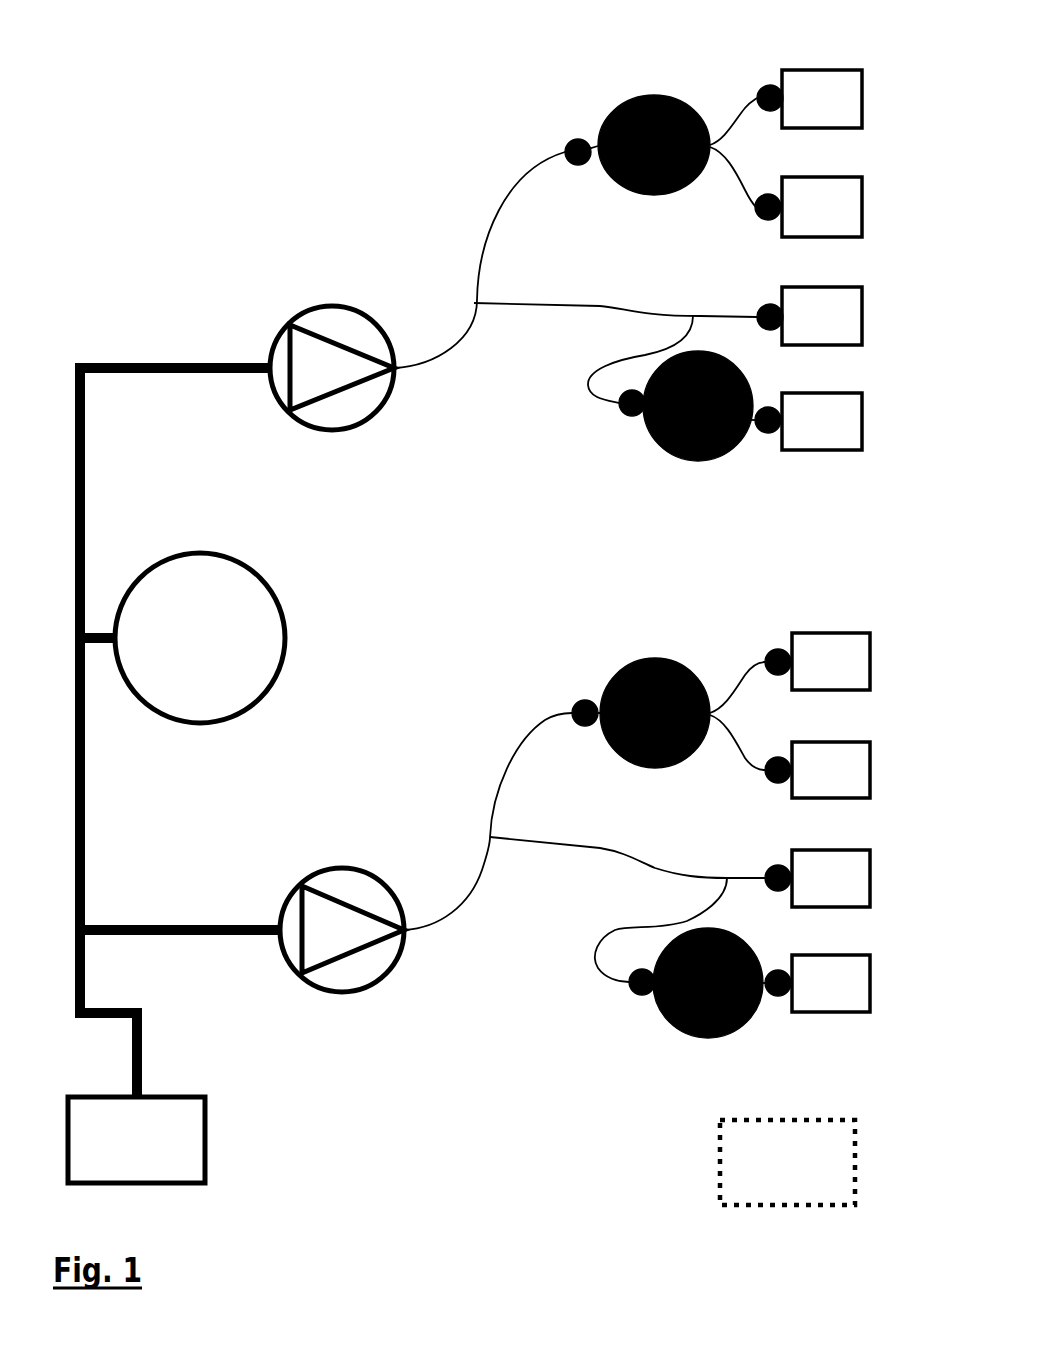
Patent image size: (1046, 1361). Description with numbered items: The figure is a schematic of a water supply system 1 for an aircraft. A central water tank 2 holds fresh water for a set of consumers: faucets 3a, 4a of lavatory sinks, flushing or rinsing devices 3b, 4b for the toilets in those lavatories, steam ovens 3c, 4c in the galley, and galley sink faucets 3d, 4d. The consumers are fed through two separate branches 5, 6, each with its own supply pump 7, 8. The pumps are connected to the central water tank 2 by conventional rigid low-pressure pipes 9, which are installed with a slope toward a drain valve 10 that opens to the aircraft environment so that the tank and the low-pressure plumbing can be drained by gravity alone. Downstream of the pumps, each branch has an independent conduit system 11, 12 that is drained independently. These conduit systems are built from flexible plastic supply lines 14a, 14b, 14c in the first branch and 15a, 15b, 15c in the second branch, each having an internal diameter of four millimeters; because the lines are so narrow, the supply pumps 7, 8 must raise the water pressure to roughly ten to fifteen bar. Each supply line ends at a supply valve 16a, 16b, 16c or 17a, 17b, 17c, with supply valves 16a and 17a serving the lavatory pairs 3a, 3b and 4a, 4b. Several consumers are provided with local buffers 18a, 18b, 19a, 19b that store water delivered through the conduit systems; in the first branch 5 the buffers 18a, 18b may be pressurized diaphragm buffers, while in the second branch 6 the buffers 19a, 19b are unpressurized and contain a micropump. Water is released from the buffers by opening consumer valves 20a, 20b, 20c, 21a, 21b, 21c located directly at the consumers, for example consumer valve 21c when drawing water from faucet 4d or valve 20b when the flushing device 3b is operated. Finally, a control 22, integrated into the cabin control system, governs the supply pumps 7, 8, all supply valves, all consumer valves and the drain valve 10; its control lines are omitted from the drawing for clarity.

The water supply system 1 is at (258, 150).
The central water tank 2 is at (192, 652).
The faucet 3a is at (806, 114).
The flushing or rinsing device 3b is at (806, 222).
The steam oven 3c is at (806, 331).
The faucet 3d is at (806, 436).
The faucet 4a is at (815, 676).
The flushing or rinsing device 4b is at (815, 785).
The steam oven 4c is at (815, 894).
The faucet 4d is at (815, 998).
The first branch 5 is at (466, 428).
The second branch 6 is at (481, 957).
The supply pump 7 is at (333, 304).
The supply pump 8 is at (342, 868).
The low-pressure pipes 9 is at (178, 362).
The drain valve 10 is at (121, 1154).
The conduit system 11 is at (499, 167).
The conduit system 12 is at (537, 895).
The flexible supply line 14a is at (493, 208).
The flexible supply line 14b is at (594, 305).
The flexible supply line 14c is at (600, 398).
The flexible supply line 15a is at (545, 717).
The flexible supply line 15b is at (648, 865).
The flexible supply line 15c is at (660, 924).
The supply valve 16a is at (577, 139).
The supply valve 16b is at (766, 304).
The supply valve 16c is at (632, 416).
The supply valve 17a is at (589, 701).
The supply valve 17b is at (768, 866).
The supply valve 17c is at (642, 996).
The local buffer 18a is at (630, 160).
The local buffer 18b is at (674, 421).
The local buffer 19a is at (631, 728).
The local buffer 19b is at (692, 983).
The consumer valve 20a is at (767, 86).
The consumer valve 20b is at (767, 194).
The consumer valve 20c is at (768, 433).
The consumer valve 21a is at (779, 650).
The consumer valve 21b is at (779, 757).
The consumer valve 21c is at (778, 970).
The control 22 is at (771, 1179).